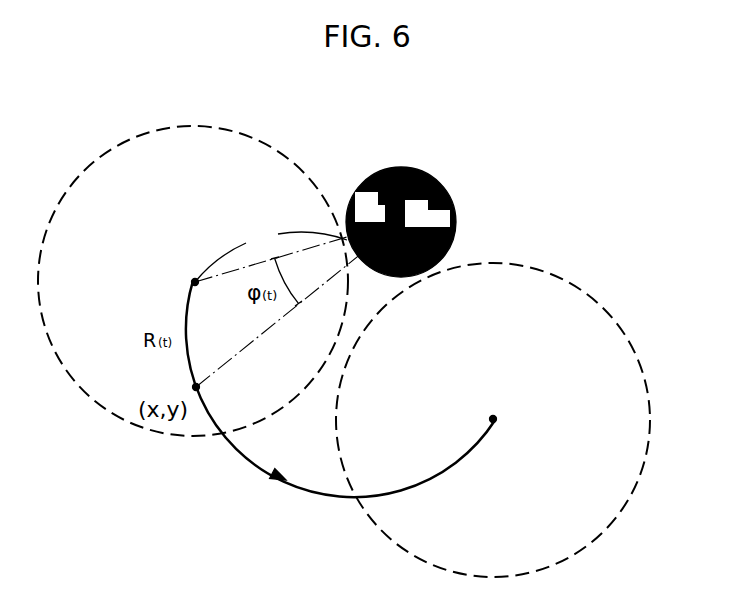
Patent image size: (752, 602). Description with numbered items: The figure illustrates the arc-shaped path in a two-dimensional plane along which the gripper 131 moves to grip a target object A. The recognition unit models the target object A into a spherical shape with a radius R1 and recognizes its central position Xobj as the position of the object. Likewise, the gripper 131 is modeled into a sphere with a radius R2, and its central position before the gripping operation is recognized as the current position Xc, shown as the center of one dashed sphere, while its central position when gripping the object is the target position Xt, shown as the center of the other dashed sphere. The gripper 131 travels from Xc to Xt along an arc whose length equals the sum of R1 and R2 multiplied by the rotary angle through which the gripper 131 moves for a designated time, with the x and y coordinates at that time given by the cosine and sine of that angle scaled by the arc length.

The gripper 131 is at (103, 153).
The target object A is at (401, 187).
The radius of the modeled spherical object R1 is at (370, 208).
The radius of the modeled spherical gripper R2 is at (271, 251).
The current position of the gripper Xc is at (183, 282).
The target position of the gripper Xt is at (506, 426).
The position of the target object Xobj is at (427, 214).